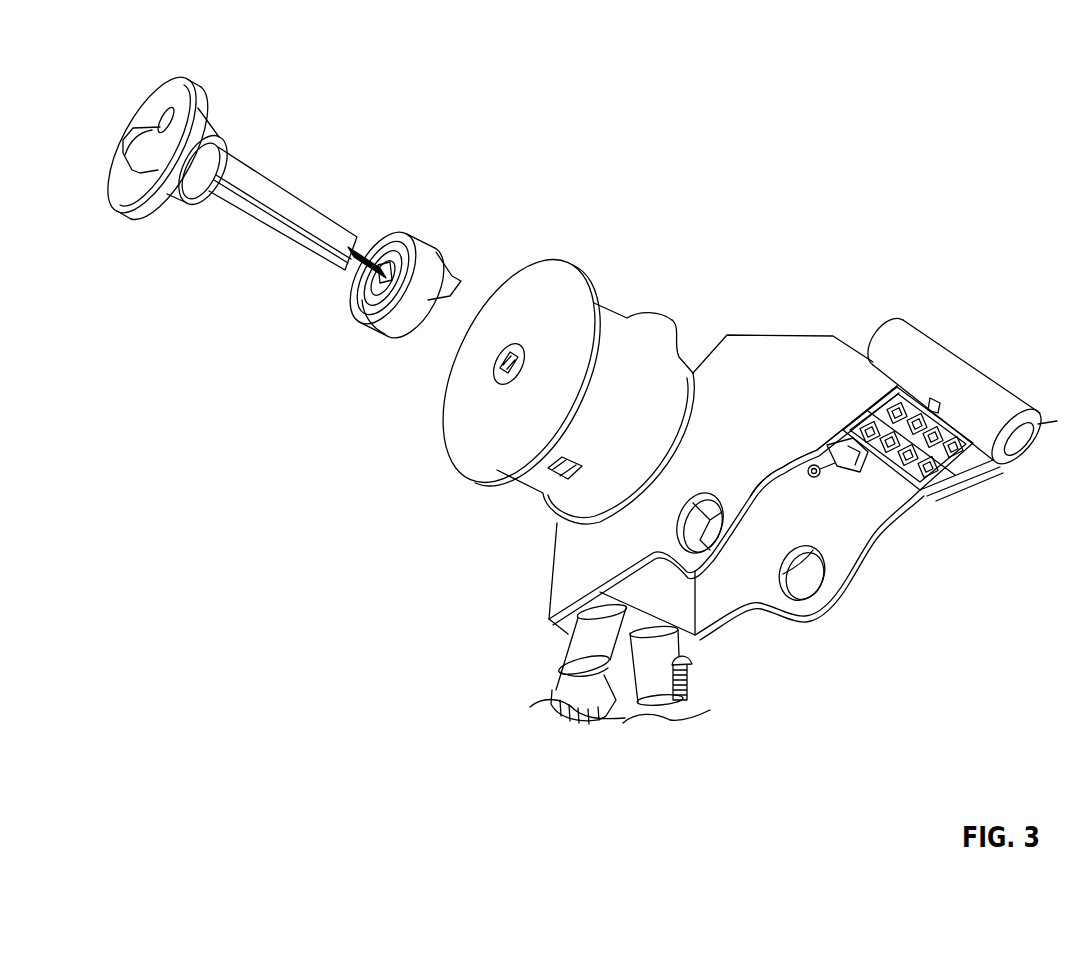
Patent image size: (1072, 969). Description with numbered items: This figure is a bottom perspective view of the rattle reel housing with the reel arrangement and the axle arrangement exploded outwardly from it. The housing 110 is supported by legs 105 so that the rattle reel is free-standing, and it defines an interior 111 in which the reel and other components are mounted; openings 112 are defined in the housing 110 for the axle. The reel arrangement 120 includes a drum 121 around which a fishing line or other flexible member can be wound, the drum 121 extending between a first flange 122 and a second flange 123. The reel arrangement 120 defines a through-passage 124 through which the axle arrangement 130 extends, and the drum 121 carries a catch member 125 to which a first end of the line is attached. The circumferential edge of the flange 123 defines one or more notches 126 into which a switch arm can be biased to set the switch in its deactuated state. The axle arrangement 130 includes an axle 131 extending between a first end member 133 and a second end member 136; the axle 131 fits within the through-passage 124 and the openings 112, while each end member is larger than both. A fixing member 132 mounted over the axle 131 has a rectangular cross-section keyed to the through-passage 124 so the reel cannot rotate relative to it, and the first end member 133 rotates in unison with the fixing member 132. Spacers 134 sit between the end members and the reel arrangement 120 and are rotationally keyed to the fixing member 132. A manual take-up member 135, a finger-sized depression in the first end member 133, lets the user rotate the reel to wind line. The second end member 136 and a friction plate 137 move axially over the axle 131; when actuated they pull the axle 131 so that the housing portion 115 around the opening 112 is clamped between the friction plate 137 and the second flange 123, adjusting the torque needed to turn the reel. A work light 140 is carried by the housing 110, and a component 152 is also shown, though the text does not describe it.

The legs 105 is at (556, 690).
The housing 110 is at (790, 336).
The interior 111 is at (900, 489).
The opening 112 is at (710, 545).
The housing portion 115 is at (840, 590).
The reel arrangement 120 is at (579, 374).
The drum 121 is at (612, 330).
The first flange 122 is at (568, 262).
The second flange 123 is at (676, 320).
The through-passage 124 is at (502, 364).
The catch member 125 is at (556, 478).
The notch 126 is at (692, 365).
The axle arrangement 130 is at (279, 195).
The axle 131 is at (350, 262).
The fixing member 132 is at (277, 238).
The first end member 133 is at (200, 107).
The spacer 134 is at (203, 198).
The manual take-up member 135 is at (163, 116).
The second end member 136 is at (434, 242).
The friction plate 137 is at (363, 307).
The work light 140 is at (940, 462).
The clip 152 is at (838, 476).